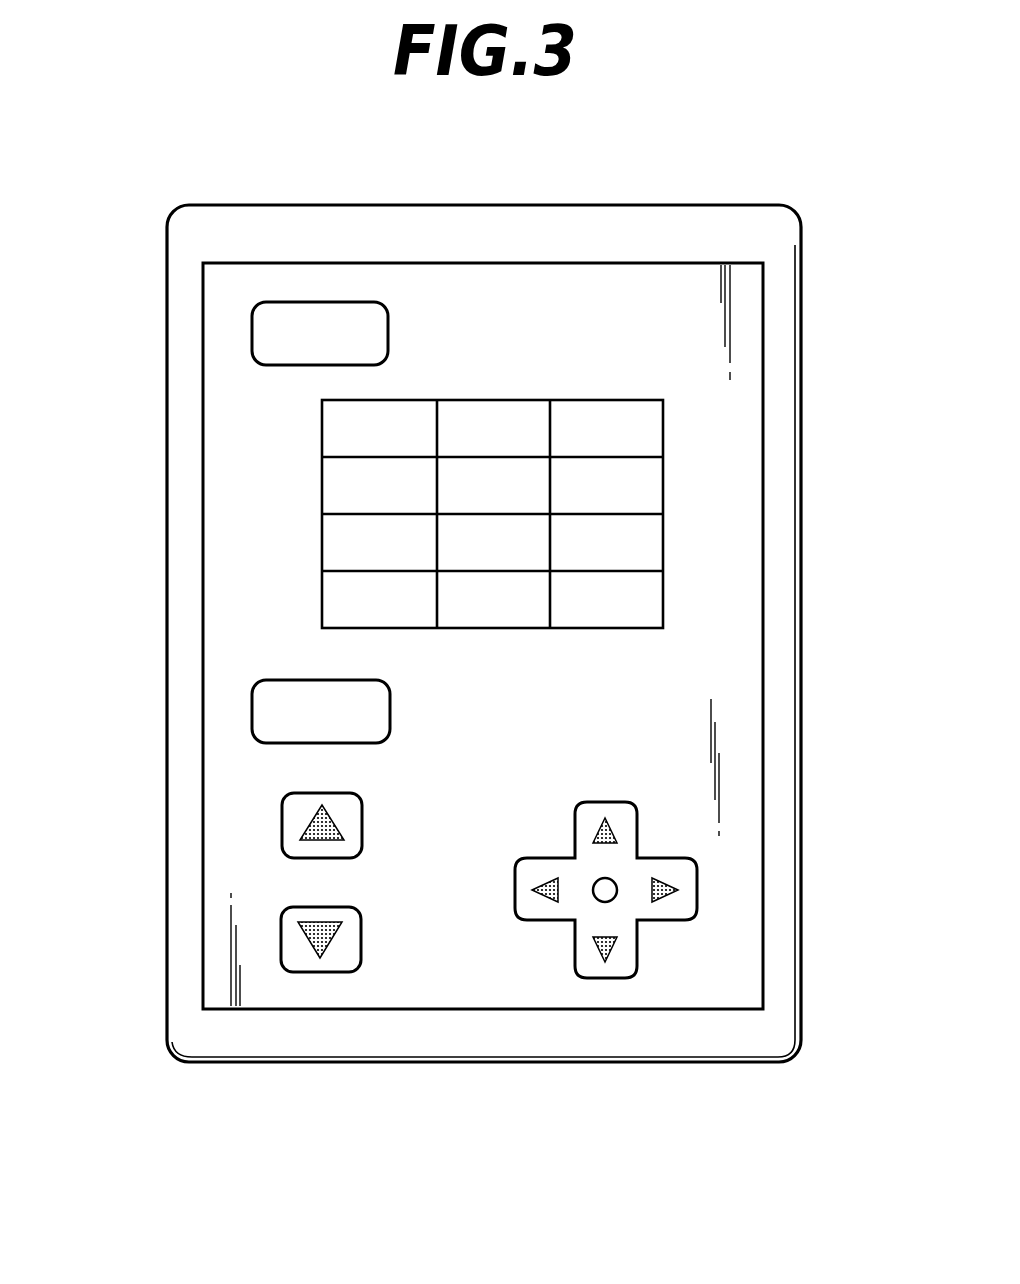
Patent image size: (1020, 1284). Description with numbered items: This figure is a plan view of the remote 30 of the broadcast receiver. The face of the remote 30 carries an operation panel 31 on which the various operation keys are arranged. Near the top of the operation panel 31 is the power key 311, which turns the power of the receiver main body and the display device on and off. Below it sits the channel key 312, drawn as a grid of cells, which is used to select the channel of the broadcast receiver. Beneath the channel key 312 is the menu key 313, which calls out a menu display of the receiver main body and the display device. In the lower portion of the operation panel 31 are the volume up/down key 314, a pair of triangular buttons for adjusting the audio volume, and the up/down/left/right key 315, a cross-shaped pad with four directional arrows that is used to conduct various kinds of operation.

The remote 30 is at (723, 204).
The operation panel 31 is at (771, 290).
The power key 311 is at (252, 325).
The channel key 312 is at (316, 520).
The menu key 313 is at (252, 715).
The volume up/down key 314 is at (285, 883).
The up/down/left/right key 315 is at (627, 907).